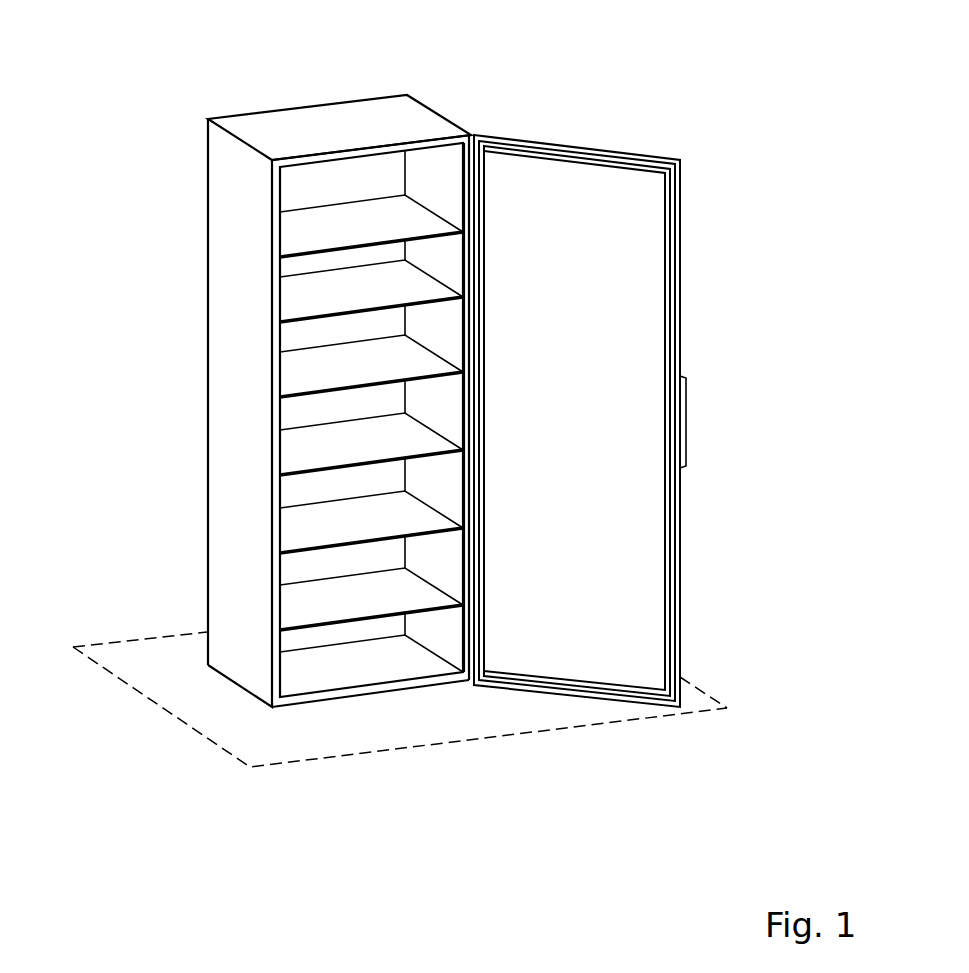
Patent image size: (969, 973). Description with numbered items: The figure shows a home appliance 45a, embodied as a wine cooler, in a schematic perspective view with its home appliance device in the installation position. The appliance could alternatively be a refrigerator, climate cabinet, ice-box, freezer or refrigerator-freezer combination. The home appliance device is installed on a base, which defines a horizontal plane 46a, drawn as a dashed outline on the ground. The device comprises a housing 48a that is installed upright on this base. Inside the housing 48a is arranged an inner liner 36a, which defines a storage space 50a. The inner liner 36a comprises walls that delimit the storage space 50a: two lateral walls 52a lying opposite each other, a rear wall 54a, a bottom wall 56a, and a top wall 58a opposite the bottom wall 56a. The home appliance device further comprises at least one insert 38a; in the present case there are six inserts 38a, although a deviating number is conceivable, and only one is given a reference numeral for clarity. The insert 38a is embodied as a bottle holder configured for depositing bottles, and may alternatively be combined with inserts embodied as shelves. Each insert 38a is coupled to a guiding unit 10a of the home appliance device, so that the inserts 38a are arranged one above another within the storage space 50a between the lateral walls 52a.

The home appliance 45a is at (167, 140).
The housing 48a is at (316, 132).
The top wall 58a is at (387, 155).
The inner liner 36a is at (467, 198).
The storage space 50a is at (335, 415).
The rear wall 54a is at (317, 490).
The lateral walls 52a is at (435, 490).
The guiding unit 10a is at (458, 542).
The insert 38a is at (342, 553).
The bottom wall 56a is at (307, 665).
The horizontal plane 46a is at (212, 740).